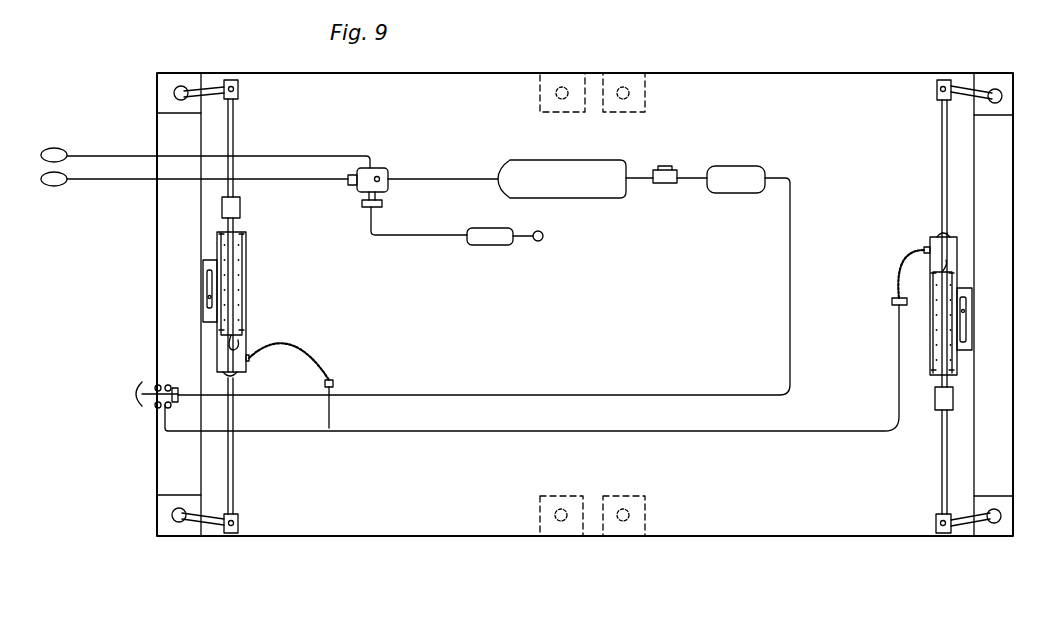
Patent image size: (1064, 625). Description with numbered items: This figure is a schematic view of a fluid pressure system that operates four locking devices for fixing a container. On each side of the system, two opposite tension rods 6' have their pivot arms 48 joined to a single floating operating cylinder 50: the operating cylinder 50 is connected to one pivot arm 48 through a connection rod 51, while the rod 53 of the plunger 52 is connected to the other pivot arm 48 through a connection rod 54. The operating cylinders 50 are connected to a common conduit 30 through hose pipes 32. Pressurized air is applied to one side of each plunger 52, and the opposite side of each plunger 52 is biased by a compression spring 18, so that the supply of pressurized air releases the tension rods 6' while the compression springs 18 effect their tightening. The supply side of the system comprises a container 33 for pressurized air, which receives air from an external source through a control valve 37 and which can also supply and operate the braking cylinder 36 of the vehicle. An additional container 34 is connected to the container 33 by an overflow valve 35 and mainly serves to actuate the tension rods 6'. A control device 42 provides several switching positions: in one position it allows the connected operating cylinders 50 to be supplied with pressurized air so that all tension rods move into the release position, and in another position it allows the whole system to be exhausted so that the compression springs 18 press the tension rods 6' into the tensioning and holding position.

The tension rod 6' is at (583, 296).
The compression spring 18 is at (238, 261).
The common conduit 30 is at (697, 72).
The hose pipe 32 is at (313, 357).
The container for pressurized air 33 is at (530, 173).
The additional container 34 is at (750, 175).
The overflow valve 35 is at (660, 168).
The braking cylinder 36 is at (483, 230).
The control valve 37 is at (370, 160).
The control device 42 is at (132, 388).
The pivot arm 48 is at (208, 82).
The operating cylinder 50 is at (238, 282).
The connection rod 51 is at (233, 482).
The plunger 52 is at (234, 346).
The rod 53 is at (238, 224).
The connection rod 54 is at (226, 187).